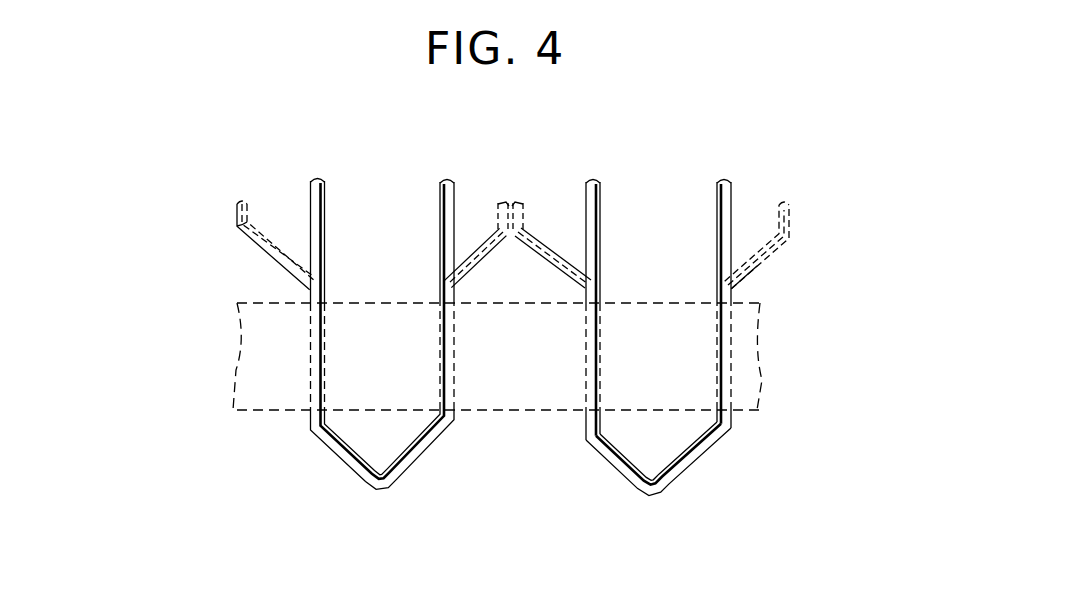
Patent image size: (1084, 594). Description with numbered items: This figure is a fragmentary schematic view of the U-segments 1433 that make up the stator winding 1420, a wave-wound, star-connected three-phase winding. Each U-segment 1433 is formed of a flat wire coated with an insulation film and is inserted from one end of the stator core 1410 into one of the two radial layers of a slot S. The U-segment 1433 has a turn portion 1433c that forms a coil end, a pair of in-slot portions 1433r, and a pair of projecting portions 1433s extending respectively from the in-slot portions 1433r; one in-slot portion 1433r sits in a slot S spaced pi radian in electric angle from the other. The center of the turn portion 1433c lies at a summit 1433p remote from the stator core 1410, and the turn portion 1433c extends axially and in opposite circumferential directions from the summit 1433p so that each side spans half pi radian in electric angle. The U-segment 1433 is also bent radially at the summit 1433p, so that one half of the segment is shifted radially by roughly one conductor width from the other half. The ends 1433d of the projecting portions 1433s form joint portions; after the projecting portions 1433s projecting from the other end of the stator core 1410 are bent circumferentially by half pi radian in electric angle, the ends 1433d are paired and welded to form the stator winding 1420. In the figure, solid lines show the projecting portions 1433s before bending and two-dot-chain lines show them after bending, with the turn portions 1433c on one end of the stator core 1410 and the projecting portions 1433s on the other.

The U-segment 1433 is at (735, 337).
The end of projecting portion 1433d is at (445, 180).
The projecting portion 1433s is at (552, 248).
The in-slot portion 1433r is at (718, 373).
The summit 1433p is at (667, 482).
The turn portion 1433c is at (586, 449).
The stator winding 1420 is at (433, 491).
The stator core 1410 is at (255, 352).
The slot S is at (308, 380).